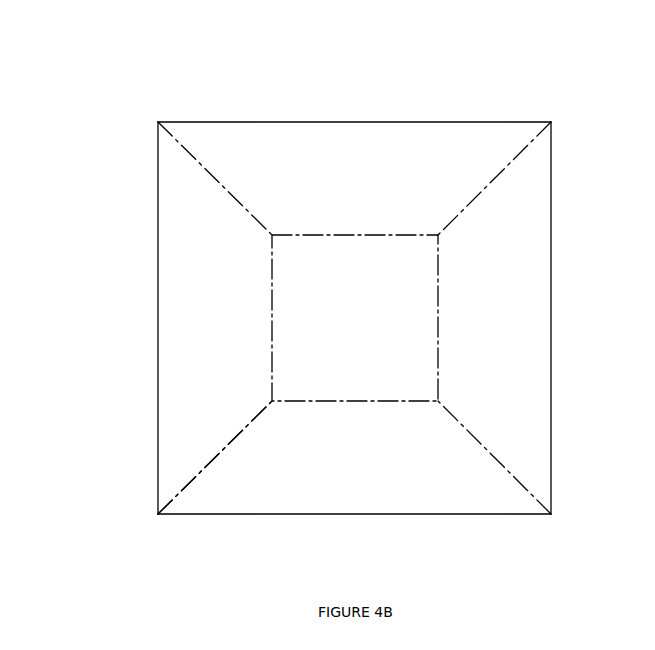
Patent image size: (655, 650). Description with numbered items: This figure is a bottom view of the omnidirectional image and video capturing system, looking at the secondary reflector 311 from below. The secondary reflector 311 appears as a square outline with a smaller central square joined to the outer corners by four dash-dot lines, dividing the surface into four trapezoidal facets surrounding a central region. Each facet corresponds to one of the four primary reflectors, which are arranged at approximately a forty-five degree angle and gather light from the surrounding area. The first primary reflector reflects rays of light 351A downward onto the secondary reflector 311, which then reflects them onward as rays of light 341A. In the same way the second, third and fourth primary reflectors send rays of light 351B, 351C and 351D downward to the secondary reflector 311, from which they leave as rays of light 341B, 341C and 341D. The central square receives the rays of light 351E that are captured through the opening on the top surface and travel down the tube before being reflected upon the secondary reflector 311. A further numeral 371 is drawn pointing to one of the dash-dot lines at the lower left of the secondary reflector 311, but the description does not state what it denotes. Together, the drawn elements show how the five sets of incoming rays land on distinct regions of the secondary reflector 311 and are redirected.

The secondary reflector 311 is at (654, 44).
The rays of light 341A is at (487, 244).
The rays of light 341B is at (417, 168).
The rays of light 341C is at (238, 279).
The rays of light 341D is at (281, 466).
The rays of light 351A is at (503, 370).
The rays of light 351B is at (315, 160).
The rays of light 351C is at (207, 347).
The rays of light 351D is at (420, 480).
The rays of light 351E is at (380, 332).
The fold line 371 is at (213, 457).